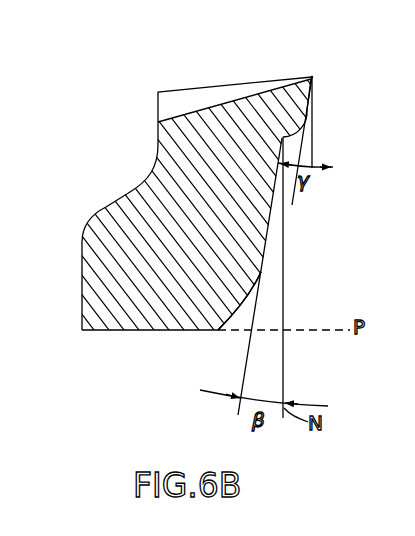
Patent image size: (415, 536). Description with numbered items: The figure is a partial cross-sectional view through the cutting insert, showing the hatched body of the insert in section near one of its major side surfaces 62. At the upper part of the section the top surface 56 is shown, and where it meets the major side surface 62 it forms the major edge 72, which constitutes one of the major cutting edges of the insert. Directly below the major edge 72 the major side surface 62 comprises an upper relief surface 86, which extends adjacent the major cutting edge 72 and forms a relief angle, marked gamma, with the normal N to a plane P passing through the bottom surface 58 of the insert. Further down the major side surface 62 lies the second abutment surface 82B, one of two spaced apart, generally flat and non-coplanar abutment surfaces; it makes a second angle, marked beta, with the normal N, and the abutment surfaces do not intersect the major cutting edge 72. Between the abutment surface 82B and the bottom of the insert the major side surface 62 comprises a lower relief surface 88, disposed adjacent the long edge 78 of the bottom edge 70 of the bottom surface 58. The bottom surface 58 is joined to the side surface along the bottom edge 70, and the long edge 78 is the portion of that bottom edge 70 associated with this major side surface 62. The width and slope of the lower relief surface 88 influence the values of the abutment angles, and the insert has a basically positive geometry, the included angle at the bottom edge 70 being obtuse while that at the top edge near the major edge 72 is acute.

The top surface 56 is at (210, 84).
The major edge 72 is at (312, 78).
The upper relief surface 86 is at (313, 100).
The major side surface 62 is at (303, 203).
The second abutment surface 82B is at (268, 229).
The lower relief surface 88 is at (252, 303).
The bottom surface 58 is at (131, 333).
The bottom edge 70 is at (217, 335).
The long edge 78 is at (217, 335).